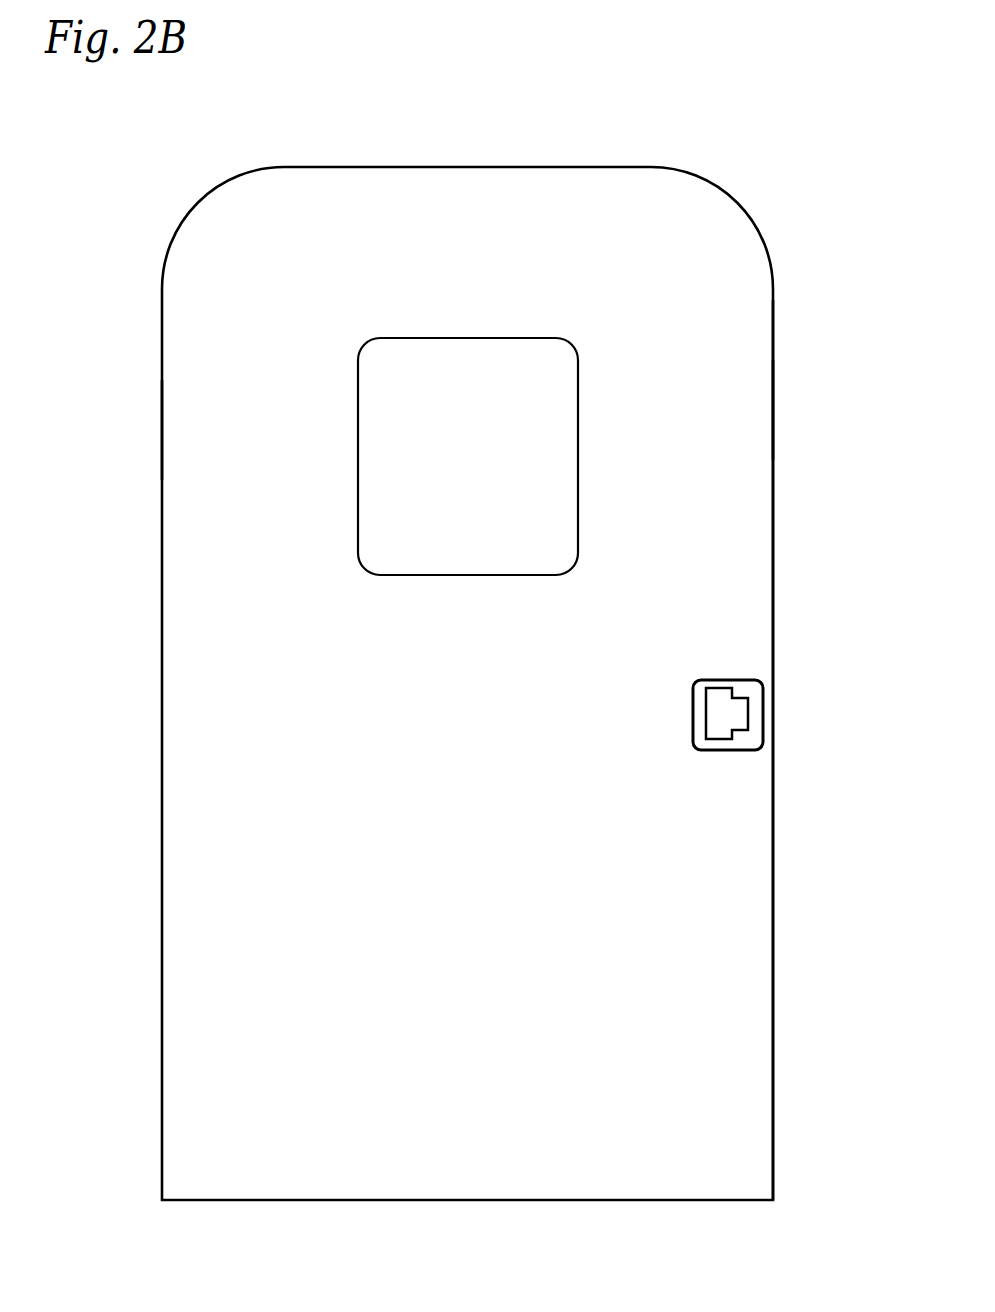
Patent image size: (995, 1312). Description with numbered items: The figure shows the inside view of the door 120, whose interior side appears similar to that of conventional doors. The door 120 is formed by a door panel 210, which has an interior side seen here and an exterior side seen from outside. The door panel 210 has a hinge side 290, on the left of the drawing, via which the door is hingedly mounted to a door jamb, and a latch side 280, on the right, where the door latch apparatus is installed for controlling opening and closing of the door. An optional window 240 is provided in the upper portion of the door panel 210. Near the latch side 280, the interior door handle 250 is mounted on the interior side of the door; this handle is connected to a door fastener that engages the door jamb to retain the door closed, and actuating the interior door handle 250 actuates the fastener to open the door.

The door 120 is at (500, 140).
The door panel 210 is at (722, 352).
The window 240 is at (502, 335).
The interior door handle 250 is at (740, 680).
The latch side 280 is at (775, 408).
The hinge side 290 is at (160, 427).